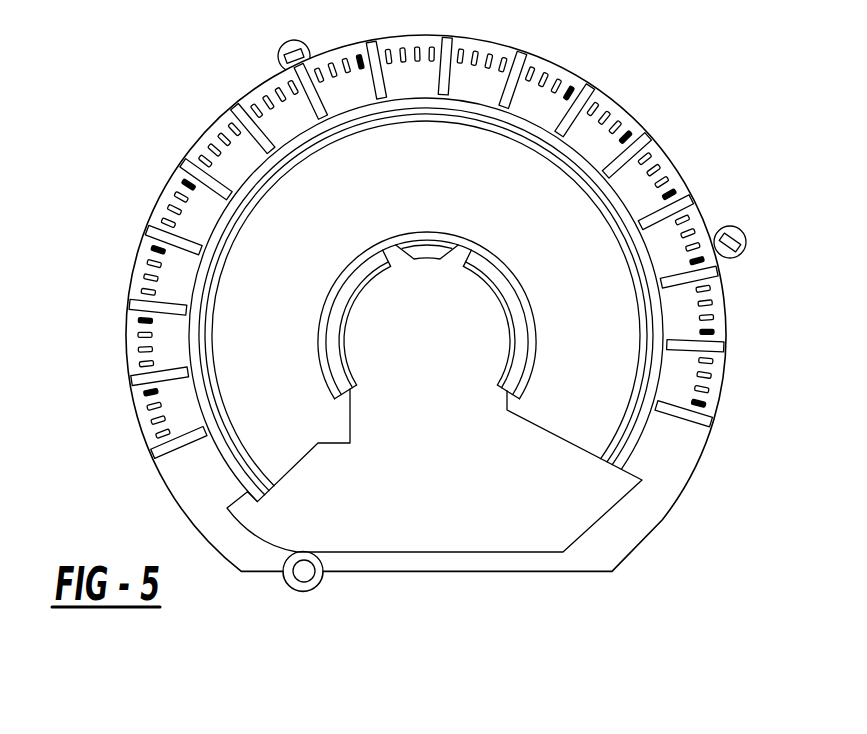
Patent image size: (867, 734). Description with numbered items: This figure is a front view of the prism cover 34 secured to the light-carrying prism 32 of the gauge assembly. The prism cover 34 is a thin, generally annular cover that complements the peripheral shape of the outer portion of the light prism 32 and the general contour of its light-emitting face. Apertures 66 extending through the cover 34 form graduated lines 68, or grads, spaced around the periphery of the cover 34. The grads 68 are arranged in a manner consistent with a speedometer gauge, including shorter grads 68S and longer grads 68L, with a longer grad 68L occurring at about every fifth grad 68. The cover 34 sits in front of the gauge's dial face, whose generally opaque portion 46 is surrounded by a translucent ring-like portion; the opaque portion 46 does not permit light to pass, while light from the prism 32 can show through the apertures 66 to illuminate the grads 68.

The light-carrying prism 32 is at (317, 413).
The prism cover 34 is at (683, 193).
The opaque portion 46 is at (379, 3).
The apertures 66 is at (669, 79).
The graduated lines 68 is at (414, 229).
The longer grads 68L is at (194, 154).
The shorter grads 68S is at (218, 130).